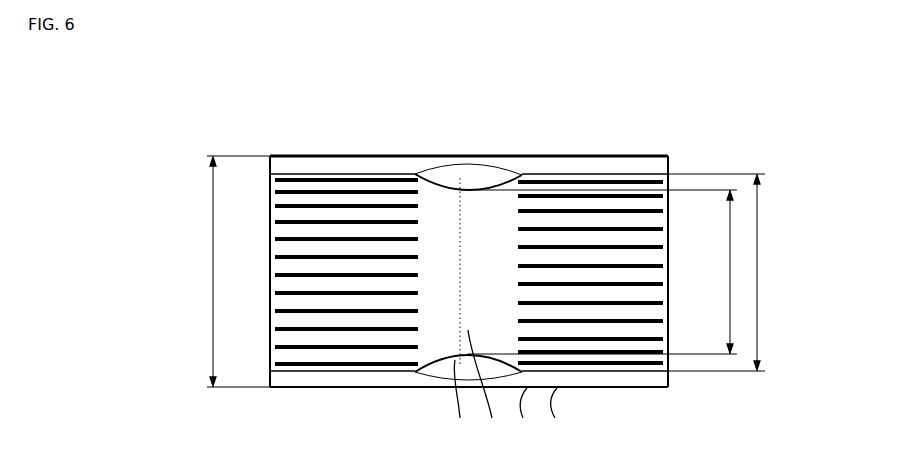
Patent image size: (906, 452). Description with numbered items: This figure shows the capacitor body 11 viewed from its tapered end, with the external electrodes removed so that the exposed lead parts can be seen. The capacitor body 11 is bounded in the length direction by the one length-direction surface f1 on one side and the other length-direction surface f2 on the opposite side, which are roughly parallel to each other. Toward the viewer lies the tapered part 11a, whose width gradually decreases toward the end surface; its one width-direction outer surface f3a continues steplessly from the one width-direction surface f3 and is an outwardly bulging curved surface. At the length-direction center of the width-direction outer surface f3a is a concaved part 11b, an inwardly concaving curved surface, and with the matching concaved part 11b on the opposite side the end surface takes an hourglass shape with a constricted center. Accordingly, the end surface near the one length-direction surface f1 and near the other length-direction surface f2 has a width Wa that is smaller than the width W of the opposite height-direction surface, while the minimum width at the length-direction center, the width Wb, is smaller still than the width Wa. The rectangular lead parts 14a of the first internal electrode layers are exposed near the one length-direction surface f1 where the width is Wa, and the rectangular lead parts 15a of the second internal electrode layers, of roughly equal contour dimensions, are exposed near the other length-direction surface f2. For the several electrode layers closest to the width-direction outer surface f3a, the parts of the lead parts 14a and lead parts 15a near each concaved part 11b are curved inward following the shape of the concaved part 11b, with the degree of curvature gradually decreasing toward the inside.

The capacitor body 11 is at (382, 157).
The tapered part 11a is at (418, 162).
The concaved part 11b is at (456, 176).
The lead part 14a is at (328, 178).
The lead part 15a is at (617, 182).
The one length-direction surface f1 is at (268, 278).
The other length-direction surface f2 is at (668, 277).
The one width-direction surface f3 is at (513, 157).
The one width-direction outer surface of the tapered part f3a is at (551, 163).
The width of the one height-direction surface W is at (233, 271).
The width Wa is at (725, 272).
The width Wb is at (741, 272).